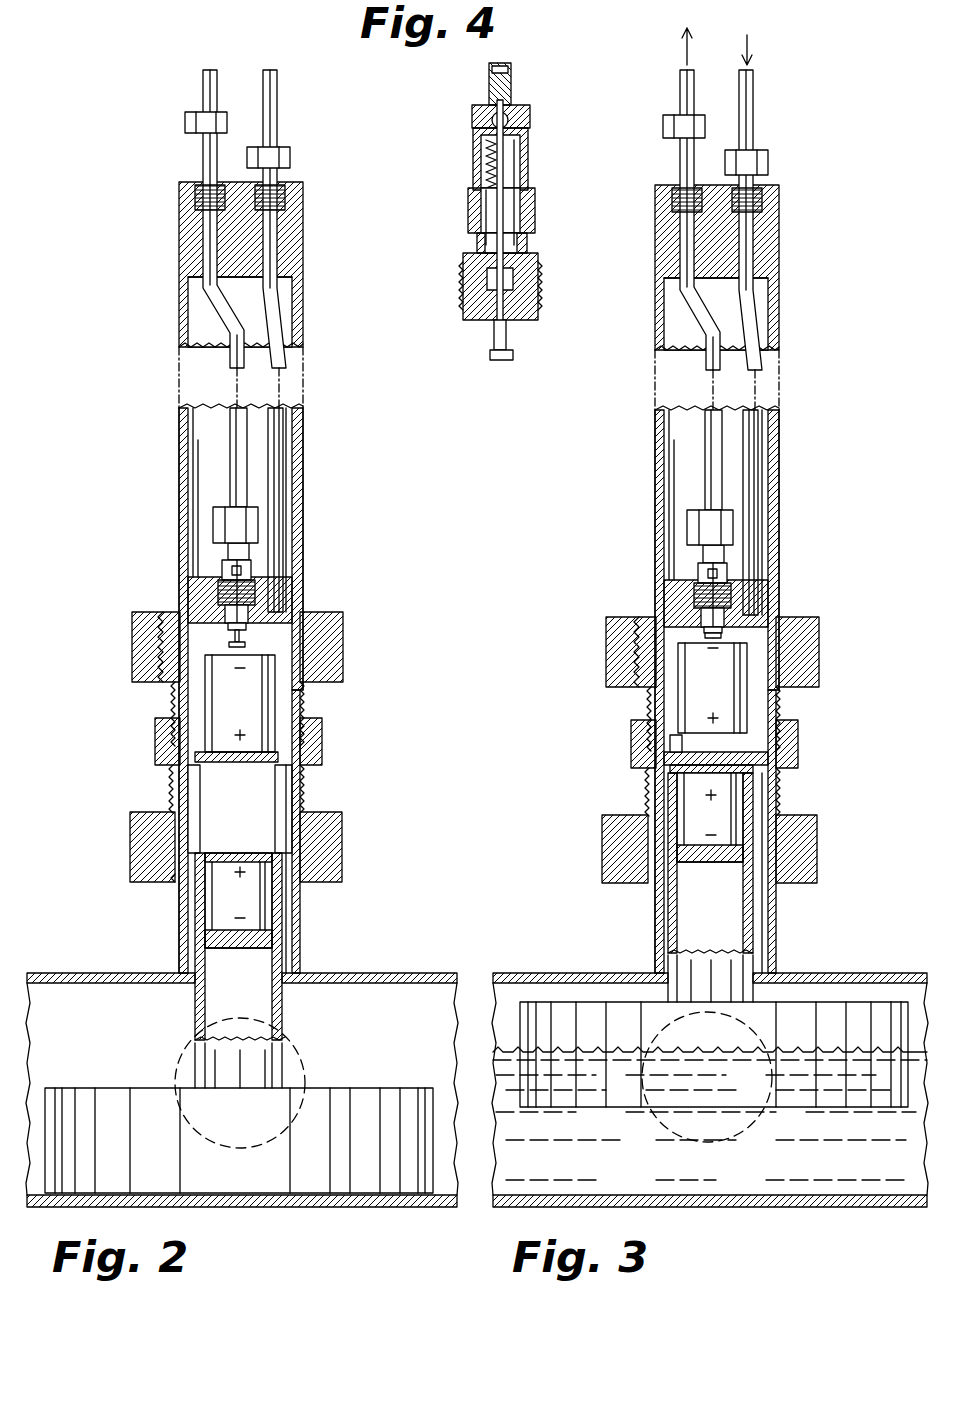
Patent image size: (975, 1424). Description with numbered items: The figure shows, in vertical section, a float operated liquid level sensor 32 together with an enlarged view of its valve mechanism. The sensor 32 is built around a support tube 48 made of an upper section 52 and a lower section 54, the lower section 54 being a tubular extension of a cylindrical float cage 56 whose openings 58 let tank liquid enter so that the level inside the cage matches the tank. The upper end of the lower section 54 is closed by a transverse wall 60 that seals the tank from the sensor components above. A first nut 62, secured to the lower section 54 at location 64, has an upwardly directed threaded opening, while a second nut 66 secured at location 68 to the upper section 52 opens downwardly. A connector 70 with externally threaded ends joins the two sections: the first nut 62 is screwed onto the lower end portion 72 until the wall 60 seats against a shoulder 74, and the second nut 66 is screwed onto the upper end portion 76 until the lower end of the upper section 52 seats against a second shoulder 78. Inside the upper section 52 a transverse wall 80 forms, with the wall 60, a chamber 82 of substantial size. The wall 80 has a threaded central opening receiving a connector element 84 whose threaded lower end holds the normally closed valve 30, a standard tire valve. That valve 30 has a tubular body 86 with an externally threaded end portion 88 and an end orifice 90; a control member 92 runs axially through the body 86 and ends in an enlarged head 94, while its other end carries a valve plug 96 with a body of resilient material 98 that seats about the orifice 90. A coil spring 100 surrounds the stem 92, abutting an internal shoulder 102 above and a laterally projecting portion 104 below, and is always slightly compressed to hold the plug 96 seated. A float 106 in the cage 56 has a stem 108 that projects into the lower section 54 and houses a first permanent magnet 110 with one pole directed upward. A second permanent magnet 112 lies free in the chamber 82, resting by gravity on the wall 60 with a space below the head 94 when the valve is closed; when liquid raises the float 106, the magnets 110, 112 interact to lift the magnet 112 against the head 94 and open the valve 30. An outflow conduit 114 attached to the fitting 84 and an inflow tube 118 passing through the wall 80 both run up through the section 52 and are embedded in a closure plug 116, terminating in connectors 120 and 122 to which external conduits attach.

In FIG. 2, the normally closed valve 30 is at (225, 588).
In FIG. 3, the normally closed valve 30 is at (663, 598).
In FIG. 4, the normally closed valve 30 is at (468, 210).
In FIG. 2, the liquid level sensor 32 is at (343, 395).
In FIG. 3, the liquid level sensor 32 is at (774, 691).
In FIG. 2, the support tube 48 is at (305, 312).
In FIG. 3, the support tube 48 is at (753, 297).
In FIG. 2, the upper section 52 is at (305, 450).
In FIG. 3, the upper section 52 is at (717, 689).
In FIG. 2, the lower section 54 is at (302, 920).
In FIG. 3, the lower section 54 is at (769, 831).
In FIG. 2, the float cage 56 is at (380, 975).
In FIG. 3, the float cage 56 is at (710, 1067).
In FIG. 2, the openings 58 is at (290, 1060).
In FIG. 3, the openings 58 is at (729, 1041).
In FIG. 2, the transverse wall 60 is at (192, 770).
In FIG. 3, the transverse wall 60 is at (618, 745).
In FIG. 2, the first nut 62 is at (345, 838).
In FIG. 3, the first nut 62 is at (744, 849).
In FIG. 2, the securement location of first nut 64 is at (173, 872).
In FIG. 2, the second nut 66 is at (335, 618).
In FIG. 3, the second nut 66 is at (738, 632).
In FIG. 2, the securement location of second nut 68 is at (305, 600).
In FIG. 2, the connector 70 is at (325, 735).
In FIG. 3, the connector 70 is at (714, 744).
In FIG. 2, the lower end portion 72 is at (310, 808).
In FIG. 3, the lower end portion 72 is at (670, 792).
In FIG. 2, the shoulder 74 is at (305, 768).
In FIG. 3, the shoulder 74 is at (766, 764).
In FIG. 2, the upper end portion 76 is at (242, 638).
In FIG. 4, the upper end portion 76 is at (483, 320).
In FIG. 2, the second shoulder 78 is at (180, 705).
In FIG. 3, the second shoulder 78 is at (663, 719).
In FIG. 2, the transverse wall 80 is at (190, 598).
In FIG. 2, the chamber 82 is at (180, 650).
In FIG. 3, the chamber 82 is at (600, 652).
In FIG. 2, the connector element 84 is at (215, 530).
In FIG. 4, the tubular body 86 is at (486, 238).
In FIG. 4, the externally threaded end portion 88 is at (540, 290).
In FIG. 4, the end orifice 90 is at (480, 120).
In FIG. 4, the control member 92 is at (505, 340).
In FIG. 2, the enlarged head 94 is at (248, 646).
In FIG. 3, the enlarged head 94 is at (711, 661).
In FIG. 4, the enlarged head 94 is at (510, 360).
In FIG. 4, the valve plug 96 is at (515, 100).
In FIG. 4, the body of resilient material 98 is at (535, 117).
In FIG. 4, the coil spring 100 is at (520, 175).
In FIG. 4, the internal shoulder 102 is at (486, 152).
In FIG. 4, the laterally projecting portion 104 is at (520, 245).
In FIG. 2, the float 106 is at (340, 1102).
In FIG. 3, the float 106 is at (710, 1054).
In FIG. 2, the stem 108 is at (284, 966).
In FIG. 2, the first permanent magnet 110 is at (262, 892).
In FIG. 3, the first permanent magnet 110 is at (784, 817).
In FIG. 2, the second permanent magnet 112 is at (260, 704).
In FIG. 3, the second permanent magnet 112 is at (774, 704).
In FIG. 2, the outflow conduit 114 is at (235, 452).
In FIG. 3, the outflow conduit 114 is at (662, 486).
In FIG. 2, the closure plug 116 is at (290, 240).
In FIG. 3, the closure plug 116 is at (754, 250).
In FIG. 2, the inflow tube 118 is at (280, 496).
In FIG. 3, the inflow tube 118 is at (791, 512).
In FIG. 2, the connector 120 is at (200, 124).
In FIG. 3, the connector 120 is at (660, 240).
In FIG. 2, the connector 122 is at (280, 150).
In FIG. 3, the connector 122 is at (779, 240).